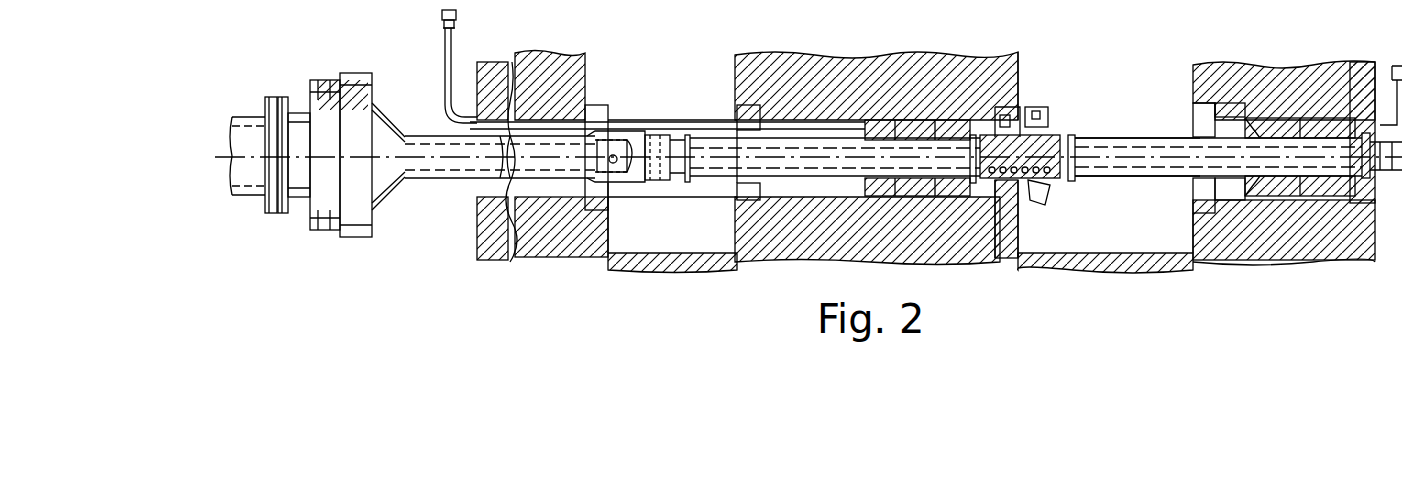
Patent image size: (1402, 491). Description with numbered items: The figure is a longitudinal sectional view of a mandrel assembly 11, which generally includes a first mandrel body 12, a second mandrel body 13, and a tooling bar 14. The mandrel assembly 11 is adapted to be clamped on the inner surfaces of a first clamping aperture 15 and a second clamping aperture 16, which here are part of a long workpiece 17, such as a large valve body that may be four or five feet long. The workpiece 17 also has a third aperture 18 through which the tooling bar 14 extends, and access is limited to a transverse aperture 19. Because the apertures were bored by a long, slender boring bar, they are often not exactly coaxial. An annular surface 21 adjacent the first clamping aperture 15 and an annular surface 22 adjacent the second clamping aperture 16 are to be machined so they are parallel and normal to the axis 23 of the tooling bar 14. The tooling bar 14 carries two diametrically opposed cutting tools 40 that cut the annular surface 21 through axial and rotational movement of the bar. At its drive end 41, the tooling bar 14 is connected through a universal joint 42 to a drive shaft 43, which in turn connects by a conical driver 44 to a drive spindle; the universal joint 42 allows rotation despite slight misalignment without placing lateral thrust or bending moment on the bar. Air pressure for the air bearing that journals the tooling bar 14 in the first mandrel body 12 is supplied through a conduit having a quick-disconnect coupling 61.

The mandrel assembly 11 is at (1123, 129).
The first mandrel body 12 is at (893, 120).
The second mandrel body 13 is at (1335, 117).
The tooling bar 14 is at (1084, 137).
The first clamping aperture 15 is at (751, 122).
The second clamping aperture 16 is at (1213, 125).
The workpiece 17 is at (805, 60).
The third aperture 18 is at (482, 116).
The transverse aperture 19 is at (1192, 70).
The annular surface 21 is at (1018, 120).
The annular surface 22 is at (1196, 110).
The axis 23 is at (1127, 158).
The cutting tools 40 is at (1020, 110).
The drive end 41 is at (687, 135).
The universal joint 42 is at (615, 135).
The drive shaft 43 is at (418, 135).
The conical driver 44 is at (240, 117).
The quick-disconnect coupling 61 is at (440, 16).